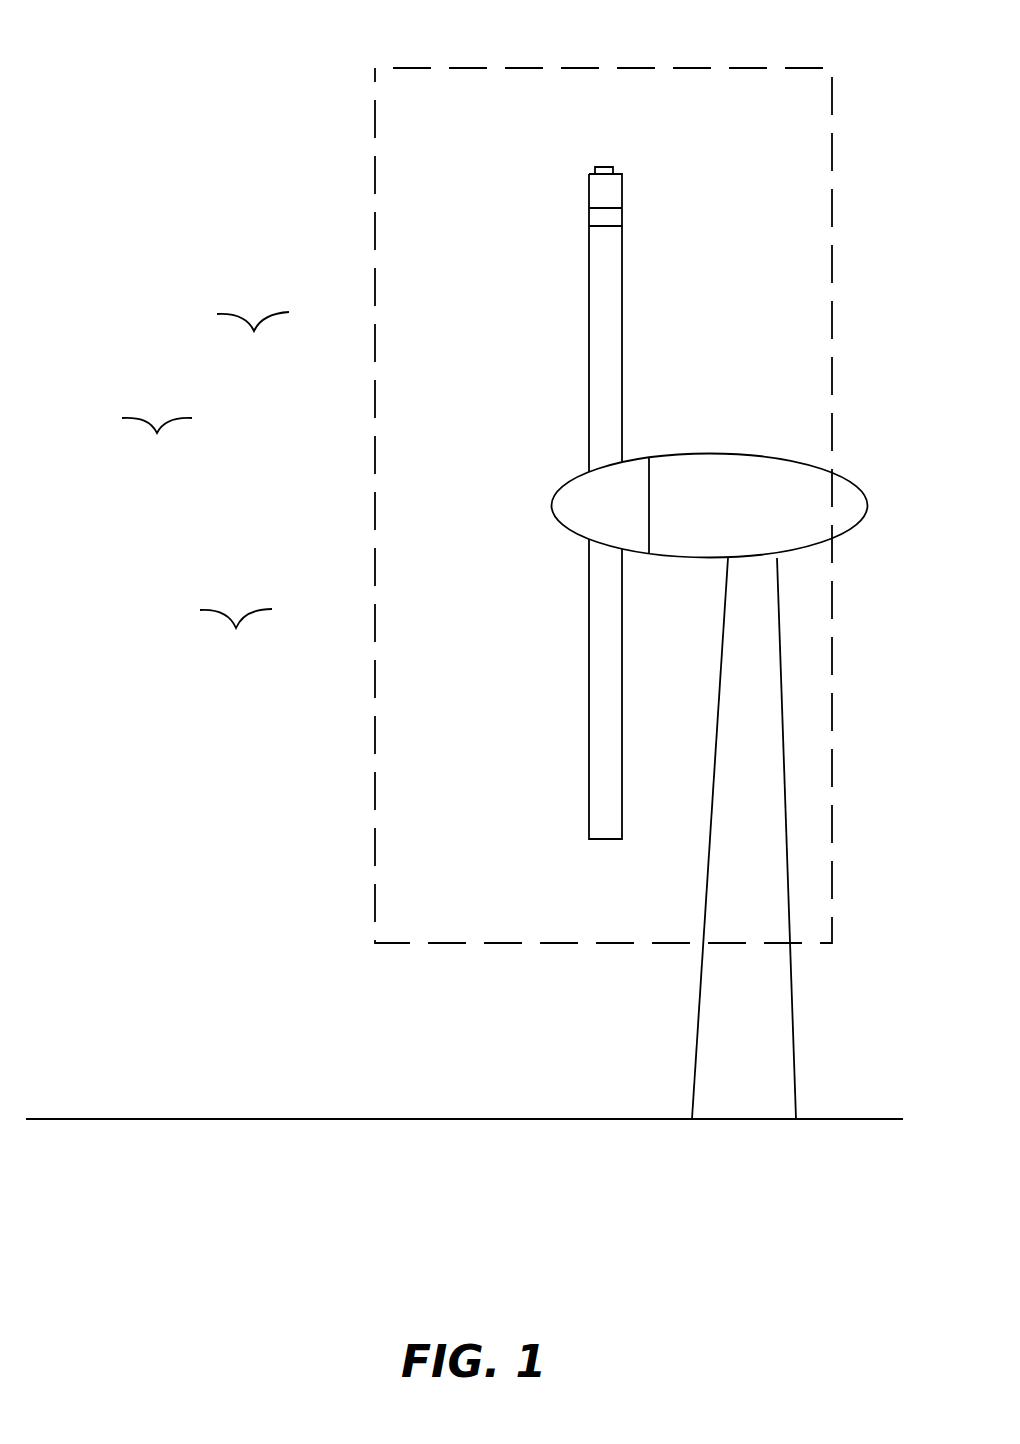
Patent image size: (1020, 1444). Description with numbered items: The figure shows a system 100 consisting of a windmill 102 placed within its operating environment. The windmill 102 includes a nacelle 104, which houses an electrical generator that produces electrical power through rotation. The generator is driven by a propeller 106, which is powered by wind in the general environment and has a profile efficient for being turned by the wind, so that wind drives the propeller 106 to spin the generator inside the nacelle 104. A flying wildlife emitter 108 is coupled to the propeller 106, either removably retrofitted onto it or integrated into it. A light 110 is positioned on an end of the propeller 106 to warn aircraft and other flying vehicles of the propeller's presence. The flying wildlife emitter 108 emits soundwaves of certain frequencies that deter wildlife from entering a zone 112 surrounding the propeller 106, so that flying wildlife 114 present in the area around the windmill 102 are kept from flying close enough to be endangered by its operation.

The system 100 is at (185, 165).
The windmill 102 is at (754, 455).
The nacelle 104 is at (680, 560).
The propeller 106 is at (623, 305).
The flying wildlife emitter 108 is at (588, 217).
The light 110 is at (602, 166).
The zone 112 is at (550, 68).
The flying wildlife 114 is at (201, 306).